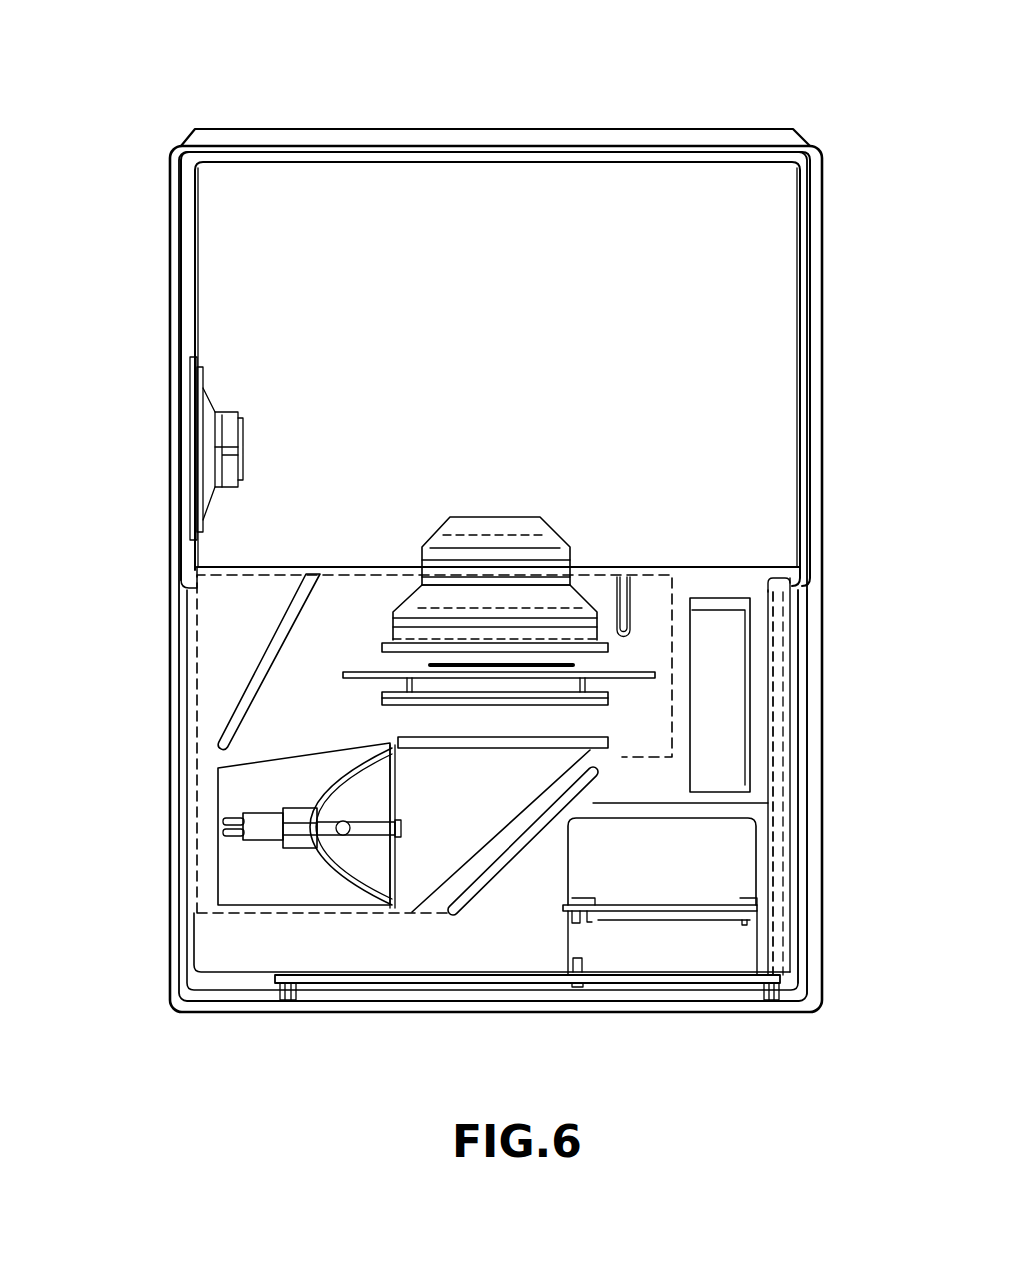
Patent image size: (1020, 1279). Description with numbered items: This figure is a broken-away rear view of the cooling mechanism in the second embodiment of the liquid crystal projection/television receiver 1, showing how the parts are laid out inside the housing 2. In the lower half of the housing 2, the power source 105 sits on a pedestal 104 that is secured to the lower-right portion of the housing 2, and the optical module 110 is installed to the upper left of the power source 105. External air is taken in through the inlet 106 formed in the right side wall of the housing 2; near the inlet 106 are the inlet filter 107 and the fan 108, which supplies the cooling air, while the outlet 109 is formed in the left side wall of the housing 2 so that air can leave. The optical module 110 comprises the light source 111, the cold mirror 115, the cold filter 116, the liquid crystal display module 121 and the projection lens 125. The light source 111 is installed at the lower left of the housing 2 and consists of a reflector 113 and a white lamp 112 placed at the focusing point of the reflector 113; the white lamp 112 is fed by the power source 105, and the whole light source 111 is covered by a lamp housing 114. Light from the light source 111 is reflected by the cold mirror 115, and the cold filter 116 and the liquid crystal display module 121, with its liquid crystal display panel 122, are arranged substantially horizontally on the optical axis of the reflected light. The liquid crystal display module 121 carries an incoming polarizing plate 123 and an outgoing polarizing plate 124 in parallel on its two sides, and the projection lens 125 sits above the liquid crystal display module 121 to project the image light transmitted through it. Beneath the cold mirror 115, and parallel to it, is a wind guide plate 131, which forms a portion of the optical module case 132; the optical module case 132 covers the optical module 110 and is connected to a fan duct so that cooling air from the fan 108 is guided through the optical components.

The liquid crystal projection/television receiver 1 is at (484, 106).
The housing 2 is at (702, 116).
The pedestal 104 is at (757, 941).
The power source 105 is at (658, 880).
The inlet 106 is at (815, 693).
The inlet filter 107 is at (783, 786).
The fan 108 is at (730, 643).
The outlet 109 is at (175, 705).
The optical module 110 is at (680, 587).
The light source 111 is at (246, 918).
The white lamp 112 is at (341, 836).
The reflector 113 is at (352, 890).
The lamp housing 114 is at (239, 907).
The cold mirror 115 is at (440, 888).
The cold filter 116 is at (594, 737).
The liquid crystal display module 121 is at (567, 653).
The liquid crystal display panel 122 is at (447, 657).
The incoming polarizing plate 123 is at (395, 703).
The outgoing polarizing plate 124 is at (527, 652).
The projection lens 125 is at (493, 519).
The wind guide plate 131 is at (508, 868).
The optical module case 132 is at (197, 630).